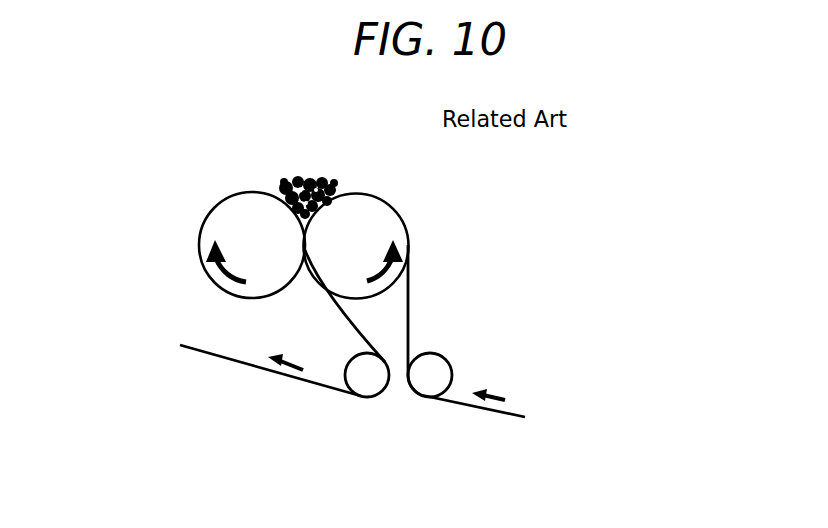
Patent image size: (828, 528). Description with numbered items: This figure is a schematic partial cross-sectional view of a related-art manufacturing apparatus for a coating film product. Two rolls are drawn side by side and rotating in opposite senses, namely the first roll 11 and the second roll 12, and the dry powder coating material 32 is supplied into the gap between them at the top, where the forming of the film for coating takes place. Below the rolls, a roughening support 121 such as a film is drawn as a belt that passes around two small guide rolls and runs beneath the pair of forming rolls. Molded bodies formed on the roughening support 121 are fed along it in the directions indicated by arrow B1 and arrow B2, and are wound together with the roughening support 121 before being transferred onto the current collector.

The first roll 11 is at (237, 225).
The second roll 12 is at (390, 217).
The dry powder coating material 32 is at (302, 180).
The roughening support 121 is at (490, 413).
The arrow B1 is at (514, 380).
The arrow B2 is at (267, 343).